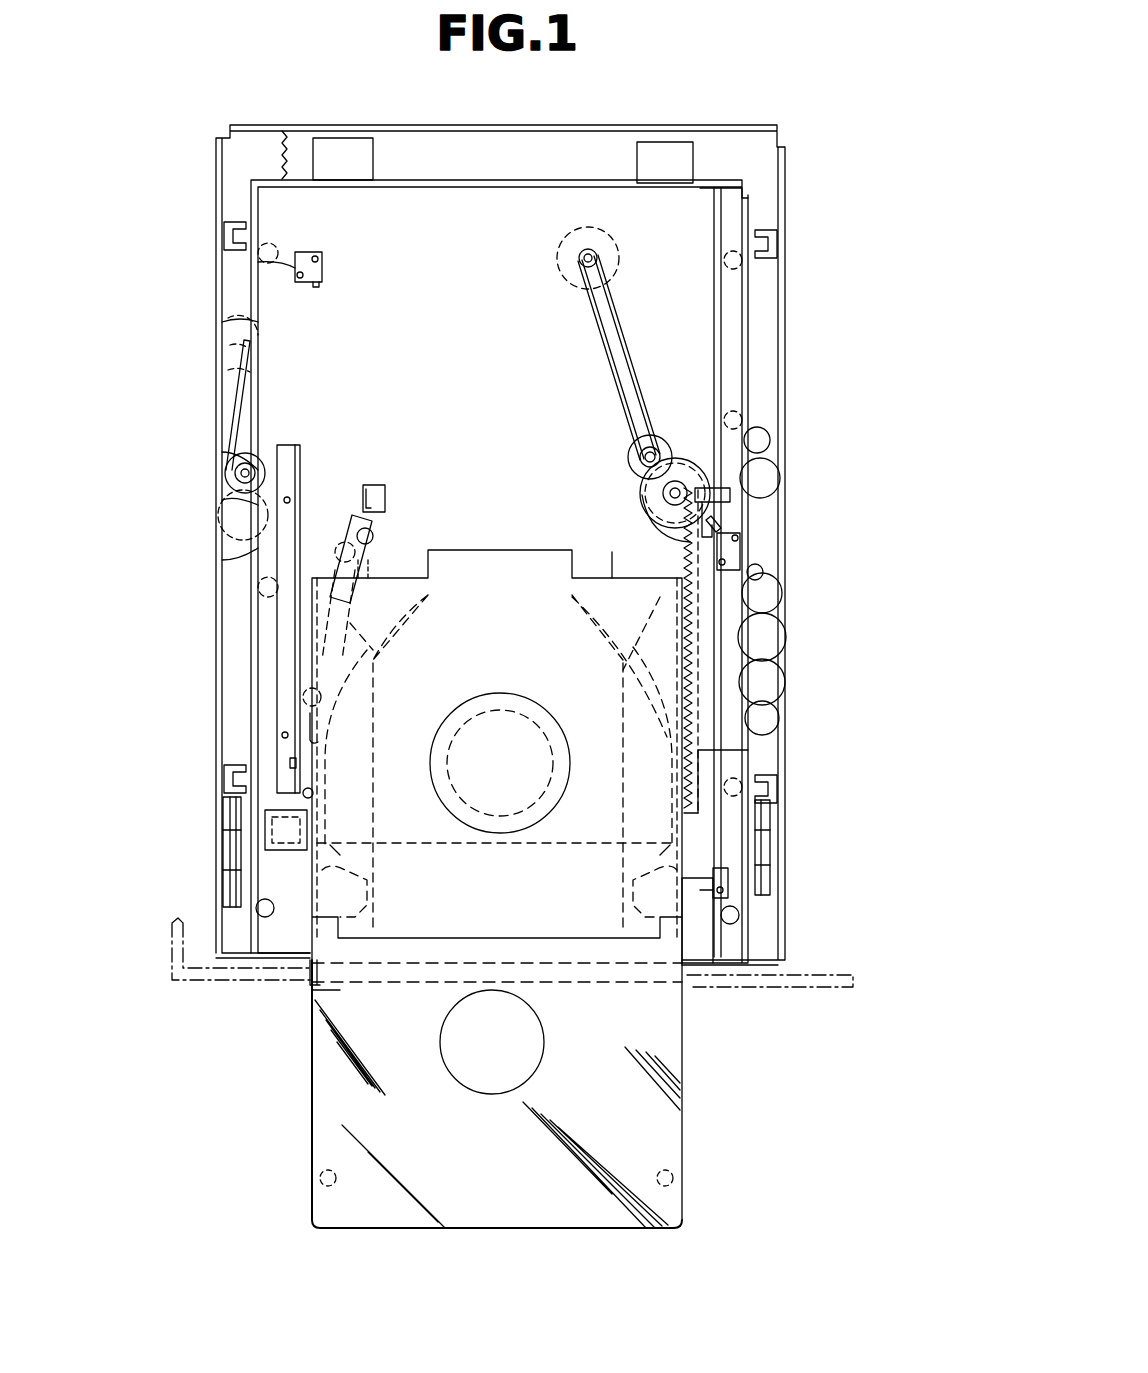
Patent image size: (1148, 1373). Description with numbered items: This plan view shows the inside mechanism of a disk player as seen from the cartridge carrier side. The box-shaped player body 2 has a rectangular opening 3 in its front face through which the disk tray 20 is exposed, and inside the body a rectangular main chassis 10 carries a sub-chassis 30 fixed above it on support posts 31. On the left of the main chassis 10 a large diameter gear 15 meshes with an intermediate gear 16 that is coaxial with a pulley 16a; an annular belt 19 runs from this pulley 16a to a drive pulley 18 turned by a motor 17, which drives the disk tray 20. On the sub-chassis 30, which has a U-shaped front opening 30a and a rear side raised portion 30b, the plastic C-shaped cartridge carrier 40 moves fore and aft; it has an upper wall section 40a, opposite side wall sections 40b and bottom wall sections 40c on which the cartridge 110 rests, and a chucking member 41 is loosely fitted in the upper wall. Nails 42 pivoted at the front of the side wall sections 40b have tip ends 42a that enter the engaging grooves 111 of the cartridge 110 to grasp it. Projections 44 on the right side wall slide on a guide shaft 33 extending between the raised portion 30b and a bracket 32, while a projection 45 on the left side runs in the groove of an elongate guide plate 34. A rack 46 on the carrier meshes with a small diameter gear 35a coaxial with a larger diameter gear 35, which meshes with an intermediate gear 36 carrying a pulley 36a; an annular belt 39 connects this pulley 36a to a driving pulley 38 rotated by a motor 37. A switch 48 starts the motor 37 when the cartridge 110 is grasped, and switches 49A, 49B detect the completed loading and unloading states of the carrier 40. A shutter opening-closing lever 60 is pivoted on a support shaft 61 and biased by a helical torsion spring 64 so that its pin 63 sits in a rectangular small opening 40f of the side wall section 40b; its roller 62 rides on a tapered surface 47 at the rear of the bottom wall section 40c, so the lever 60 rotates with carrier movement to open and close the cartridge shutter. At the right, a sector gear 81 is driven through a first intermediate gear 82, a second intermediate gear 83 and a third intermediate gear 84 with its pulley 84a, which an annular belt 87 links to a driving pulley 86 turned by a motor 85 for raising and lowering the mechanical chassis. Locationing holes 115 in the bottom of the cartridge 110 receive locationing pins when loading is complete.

The player body 2 is at (222, 988).
The rectangular opening 3 is at (306, 988).
The main chassis 10 is at (790, 293).
The large diameter gear 15 is at (240, 532).
The intermediate gear 16 is at (240, 490).
The pulley 16a is at (243, 472).
The motor 17 is at (230, 360).
The drive pulley 18 is at (230, 318).
The annular belt 19 is at (235, 410).
The disk tray 20 is at (342, 988).
The sub-chassis 30 is at (756, 352).
The front opening 30a is at (620, 962).
The rear side raised portion 30b is at (748, 195).
The support posts 31 is at (258, 253).
The bracket 32 is at (700, 930).
The guide shaft 33 is at (720, 322).
The elongate guide plate 34 is at (277, 630).
The larger diameter gear 35 is at (650, 500).
The small diameter gear 35a is at (692, 478).
The intermediate gear 36 is at (632, 445).
The pulley 36a is at (640, 465).
The motor 37 is at (605, 240).
The driving pulley 38 is at (598, 258).
The annular belt 39 is at (628, 322).
The cartridge carrier 40 is at (398, 575).
The upper wall section 40a is at (612, 578).
The side wall sections 40b is at (312, 660).
The bottom wall sections 40c is at (625, 795).
The rectangular small opening 40f is at (308, 720).
The chucking member 41 is at (558, 740).
The nails 42 is at (222, 880).
The tip ends 42a is at (368, 880).
The projections 44 is at (732, 495).
The projection 45 is at (288, 763).
The rack 46 is at (660, 535).
The tapered surface 47 is at (378, 630).
The switch 48 is at (265, 828).
The switch 49A is at (258, 262).
The switch 49B is at (742, 550).
The shutter opening-closing lever 60 is at (356, 512).
The support shaft 61 is at (373, 532).
The roller 62 is at (342, 565).
The pin 63 is at (303, 695).
The helical torsion spring 64 is at (385, 498).
The sector gear 81 is at (775, 714).
The first intermediate gear 82 is at (778, 678).
The second intermediate gear 83 is at (778, 645).
The third intermediate gear 84 is at (772, 605).
The pulley 84a is at (765, 580).
The motor 85 is at (765, 438).
The driving pulley 86 is at (775, 468).
The annular belt 87 is at (735, 522).
The cartridge 110 is at (312, 1100).
The engaging grooves 111 is at (335, 850).
The locationing holes 115 is at (320, 1175).